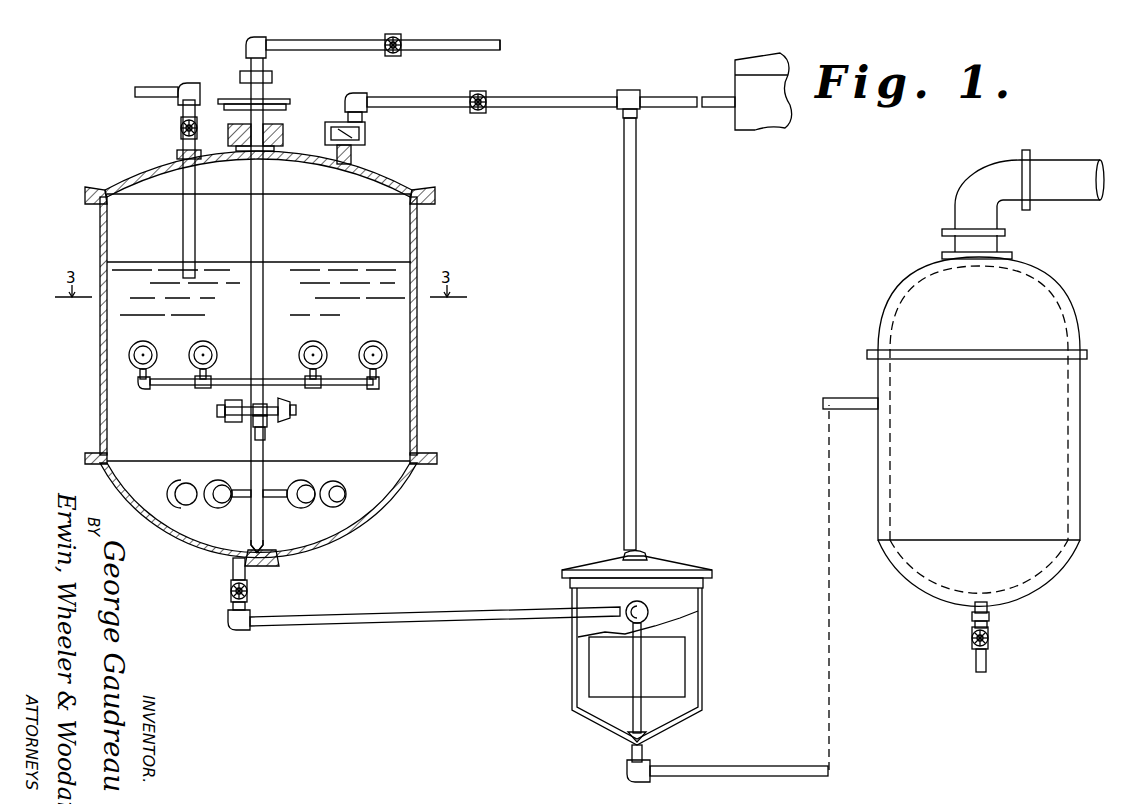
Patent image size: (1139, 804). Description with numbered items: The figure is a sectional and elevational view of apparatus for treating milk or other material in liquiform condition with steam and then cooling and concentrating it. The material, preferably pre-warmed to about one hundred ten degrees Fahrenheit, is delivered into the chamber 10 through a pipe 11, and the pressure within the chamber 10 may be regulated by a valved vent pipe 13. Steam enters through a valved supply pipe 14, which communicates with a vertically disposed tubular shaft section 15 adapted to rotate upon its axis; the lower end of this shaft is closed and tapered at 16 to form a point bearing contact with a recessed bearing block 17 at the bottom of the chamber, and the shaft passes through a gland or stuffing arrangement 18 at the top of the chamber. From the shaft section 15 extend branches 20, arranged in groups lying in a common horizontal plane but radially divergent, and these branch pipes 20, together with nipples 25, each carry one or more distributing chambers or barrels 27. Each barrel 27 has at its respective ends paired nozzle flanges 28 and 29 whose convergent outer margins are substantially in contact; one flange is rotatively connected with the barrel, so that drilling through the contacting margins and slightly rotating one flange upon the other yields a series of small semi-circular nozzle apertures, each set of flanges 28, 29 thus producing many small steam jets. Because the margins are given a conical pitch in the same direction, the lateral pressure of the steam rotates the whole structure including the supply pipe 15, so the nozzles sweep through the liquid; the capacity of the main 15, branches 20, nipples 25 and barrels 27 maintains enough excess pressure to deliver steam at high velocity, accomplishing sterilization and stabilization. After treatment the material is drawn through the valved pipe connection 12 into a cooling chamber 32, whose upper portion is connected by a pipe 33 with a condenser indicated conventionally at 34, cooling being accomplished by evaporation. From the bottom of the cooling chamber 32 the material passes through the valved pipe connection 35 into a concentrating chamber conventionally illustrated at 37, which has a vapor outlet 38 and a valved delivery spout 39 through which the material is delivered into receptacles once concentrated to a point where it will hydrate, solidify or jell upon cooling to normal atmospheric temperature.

The chamber 10 is at (261, 354).
The pipe 11 is at (194, 212).
The valved pipe connection 12 is at (283, 628).
The valved vent pipe 13 is at (395, 107).
The valved supply pipe 14 is at (302, 50).
The tubular shaft section 15 is at (263, 240).
The tapered lower end 16 is at (268, 548).
The recessed bearing block 17 is at (277, 568).
The packing gland flange 18 is at (290, 103).
The branch pipes 20 is at (298, 385).
The nipples 25 is at (378, 389).
The distributing barrel 27 is at (266, 428).
The nozzle flange 28 is at (290, 414).
The nozzle flange 29 is at (228, 418).
The cooling chamber 32 is at (572, 668).
The pipe 33 is at (640, 405).
The condenser 34 is at (763, 91).
The valved pipe connection 35 is at (665, 777).
The concentrating chamber 37 is at (977, 425).
The vapor outlet 38 is at (1029, 189).
The valved delivery spout 39 is at (990, 662).